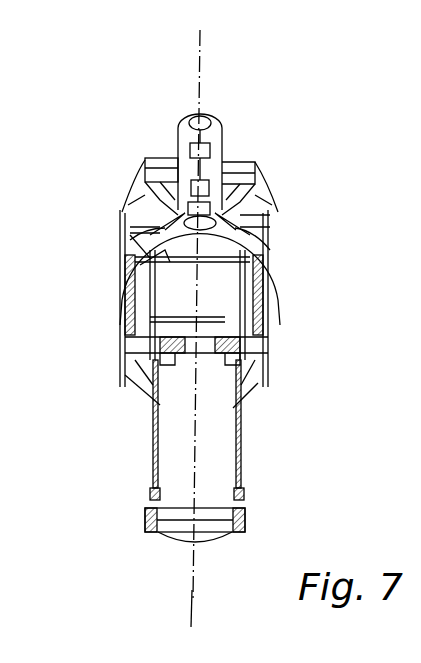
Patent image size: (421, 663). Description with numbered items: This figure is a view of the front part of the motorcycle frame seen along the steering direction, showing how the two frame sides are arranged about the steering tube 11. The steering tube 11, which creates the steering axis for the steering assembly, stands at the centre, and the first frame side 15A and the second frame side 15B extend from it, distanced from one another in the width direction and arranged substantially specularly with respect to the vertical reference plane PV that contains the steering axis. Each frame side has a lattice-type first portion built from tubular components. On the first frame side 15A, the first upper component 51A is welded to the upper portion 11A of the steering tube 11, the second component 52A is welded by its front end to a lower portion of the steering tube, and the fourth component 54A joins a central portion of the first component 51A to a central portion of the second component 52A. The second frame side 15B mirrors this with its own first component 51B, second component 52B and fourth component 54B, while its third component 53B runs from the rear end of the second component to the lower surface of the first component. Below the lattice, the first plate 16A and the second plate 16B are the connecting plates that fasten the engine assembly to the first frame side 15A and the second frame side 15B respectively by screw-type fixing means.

The steering tube 11 is at (222, 147).
The upper portion of the steering tube 11A is at (214, 107).
The first frame side 15A is at (285, 293).
The second frame side 15B is at (92, 348).
The first plate 16A is at (268, 387).
The second plate 16B is at (118, 375).
The first upper component 51A is at (256, 200).
The first upper component 51B is at (135, 200).
The second component 52A is at (262, 243).
The second component 52B is at (160, 257).
The third component 53B is at (133, 239).
The fourth component 54A is at (274, 213).
The fourth component 54B is at (150, 185).
The vertical reference plane PV is at (198, 618).